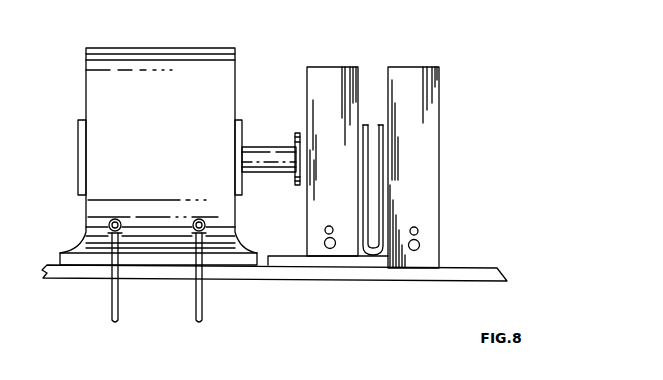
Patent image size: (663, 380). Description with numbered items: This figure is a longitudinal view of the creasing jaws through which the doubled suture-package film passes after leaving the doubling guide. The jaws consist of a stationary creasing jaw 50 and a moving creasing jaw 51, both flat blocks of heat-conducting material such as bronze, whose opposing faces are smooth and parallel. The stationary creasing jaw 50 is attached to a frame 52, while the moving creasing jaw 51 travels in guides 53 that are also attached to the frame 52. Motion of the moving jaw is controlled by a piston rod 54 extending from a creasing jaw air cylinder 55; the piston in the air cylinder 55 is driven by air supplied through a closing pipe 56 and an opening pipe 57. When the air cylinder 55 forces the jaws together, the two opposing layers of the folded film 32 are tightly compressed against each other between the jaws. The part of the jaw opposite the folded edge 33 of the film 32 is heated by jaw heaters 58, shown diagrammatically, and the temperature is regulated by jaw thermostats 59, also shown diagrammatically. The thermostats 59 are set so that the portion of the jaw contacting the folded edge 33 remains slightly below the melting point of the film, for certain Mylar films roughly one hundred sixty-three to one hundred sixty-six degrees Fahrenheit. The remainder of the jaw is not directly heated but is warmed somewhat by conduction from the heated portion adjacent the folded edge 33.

The film 32 is at (380, 125).
The folded edge 33 is at (366, 253).
The stationary creasing jaw 50 is at (421, 67).
The moving creasing jaw 51 is at (325, 67).
The frame 52 is at (494, 268).
The guides 53 is at (273, 256).
The piston rod 54 is at (248, 147).
The creasing jaw air cylinder 55 is at (163, 48).
The closing pipe 56 is at (118, 323).
The opening pipe 57 is at (202, 323).
The jaw heaters 58 is at (325, 228).
The jaw thermostats 59 is at (420, 245).